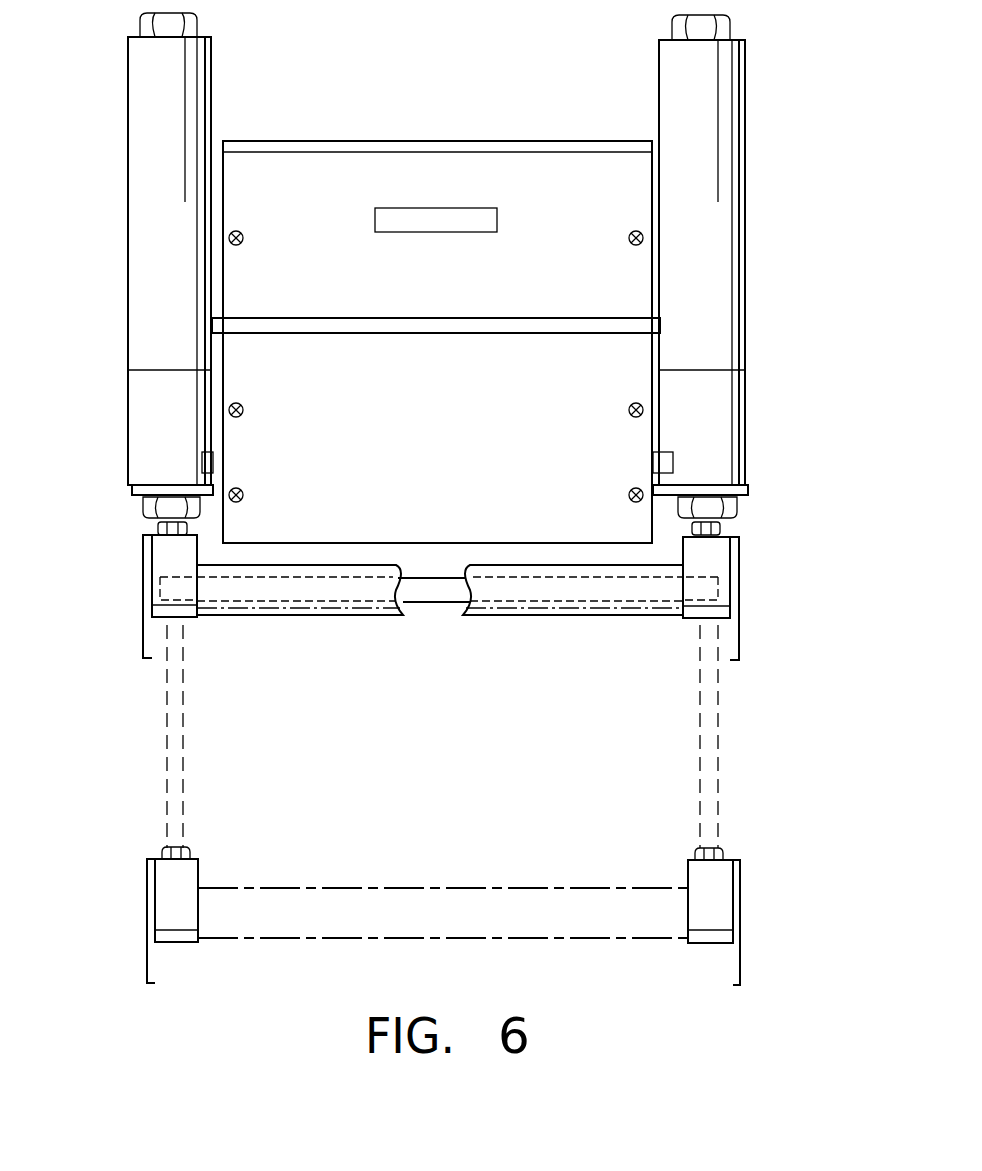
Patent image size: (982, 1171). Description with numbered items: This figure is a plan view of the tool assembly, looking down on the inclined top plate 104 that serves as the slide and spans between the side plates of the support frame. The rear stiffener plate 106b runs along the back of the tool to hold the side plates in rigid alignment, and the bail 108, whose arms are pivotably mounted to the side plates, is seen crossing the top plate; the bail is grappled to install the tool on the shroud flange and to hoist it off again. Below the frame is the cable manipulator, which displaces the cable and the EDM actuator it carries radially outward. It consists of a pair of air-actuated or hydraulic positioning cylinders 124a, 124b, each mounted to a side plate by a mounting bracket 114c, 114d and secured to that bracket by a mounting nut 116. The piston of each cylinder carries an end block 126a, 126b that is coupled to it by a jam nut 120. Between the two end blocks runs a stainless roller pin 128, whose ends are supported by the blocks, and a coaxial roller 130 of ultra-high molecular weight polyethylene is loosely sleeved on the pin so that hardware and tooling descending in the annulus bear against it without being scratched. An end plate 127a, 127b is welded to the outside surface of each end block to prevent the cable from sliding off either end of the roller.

The inclined top plate 104 is at (310, 168).
The stiffener plate 106b is at (458, 141).
The bail 108 is at (365, 335).
The mounting bracket 114c is at (748, 492).
The mounting bracket 114d is at (132, 493).
The mounting nut 116 is at (738, 510).
The jam nut 120 is at (722, 528).
The positioning cylinder 124a is at (745, 243).
The positioning cylinder 124b is at (128, 272).
The end block 126a is at (733, 565).
The end block 126b is at (152, 582).
The end plate 127a is at (742, 958).
The end plate 127b is at (147, 898).
The roller pin 128 is at (432, 605).
The roller 130 is at (280, 615).